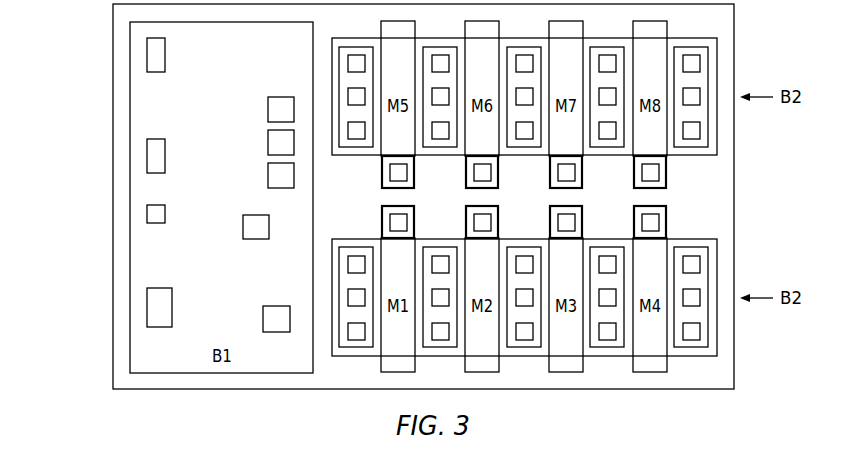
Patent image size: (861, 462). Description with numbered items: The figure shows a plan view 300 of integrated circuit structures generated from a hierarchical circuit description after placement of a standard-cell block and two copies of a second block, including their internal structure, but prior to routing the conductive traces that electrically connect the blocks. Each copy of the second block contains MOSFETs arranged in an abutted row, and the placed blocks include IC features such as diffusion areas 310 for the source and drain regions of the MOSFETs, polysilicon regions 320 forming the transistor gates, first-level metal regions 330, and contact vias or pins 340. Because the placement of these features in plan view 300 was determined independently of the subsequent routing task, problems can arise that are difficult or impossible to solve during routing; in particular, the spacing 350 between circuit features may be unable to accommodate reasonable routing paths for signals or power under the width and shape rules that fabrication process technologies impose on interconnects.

The plan view 300 is at (58, 56).
The diffusion areas 310 is at (673, 38).
The polysilicon regions 320 is at (414, 222).
The metal 1 regions 330 is at (172, 305).
The contact vias or pins 340 is at (356, 55).
The spacing 350 is at (628, 197).